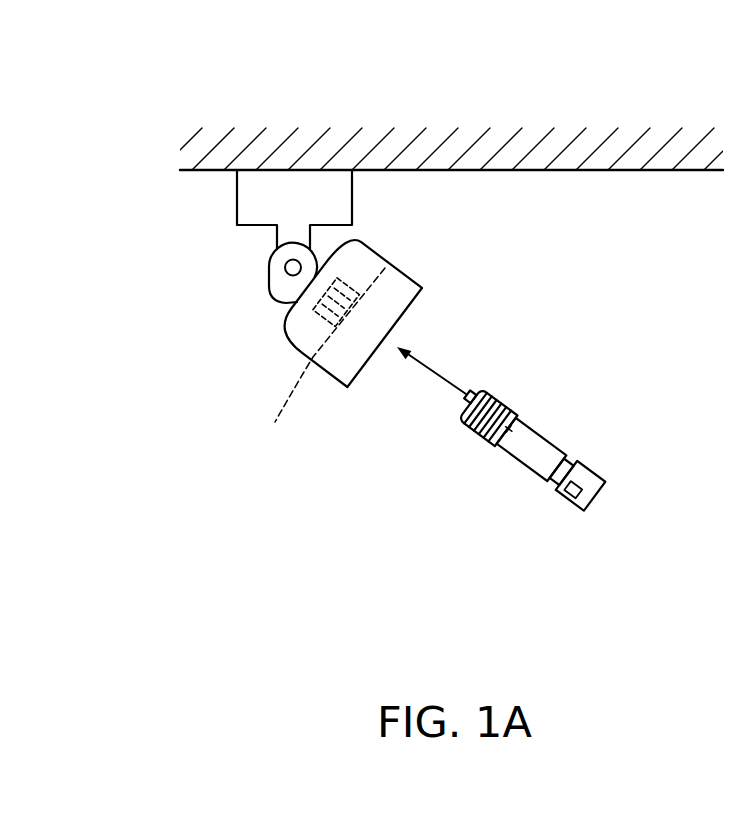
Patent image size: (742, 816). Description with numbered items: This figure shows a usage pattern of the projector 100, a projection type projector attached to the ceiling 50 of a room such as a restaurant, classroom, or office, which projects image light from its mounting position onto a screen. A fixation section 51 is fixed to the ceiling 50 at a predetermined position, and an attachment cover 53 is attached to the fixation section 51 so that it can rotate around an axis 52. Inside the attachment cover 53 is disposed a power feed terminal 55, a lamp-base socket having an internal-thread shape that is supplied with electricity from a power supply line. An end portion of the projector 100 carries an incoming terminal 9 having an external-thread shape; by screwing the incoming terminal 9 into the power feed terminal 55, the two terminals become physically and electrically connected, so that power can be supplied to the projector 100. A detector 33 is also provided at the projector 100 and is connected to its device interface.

The ceiling 50 is at (463, 170).
The fixation section 51 is at (237, 192).
The axis 52 is at (285, 268).
The attachment cover 53 is at (422, 285).
The power feed terminal 55 is at (324, 361).
The incoming terminal 9 is at (492, 394).
The projector 100 is at (552, 438).
The detector 33 is at (567, 498).